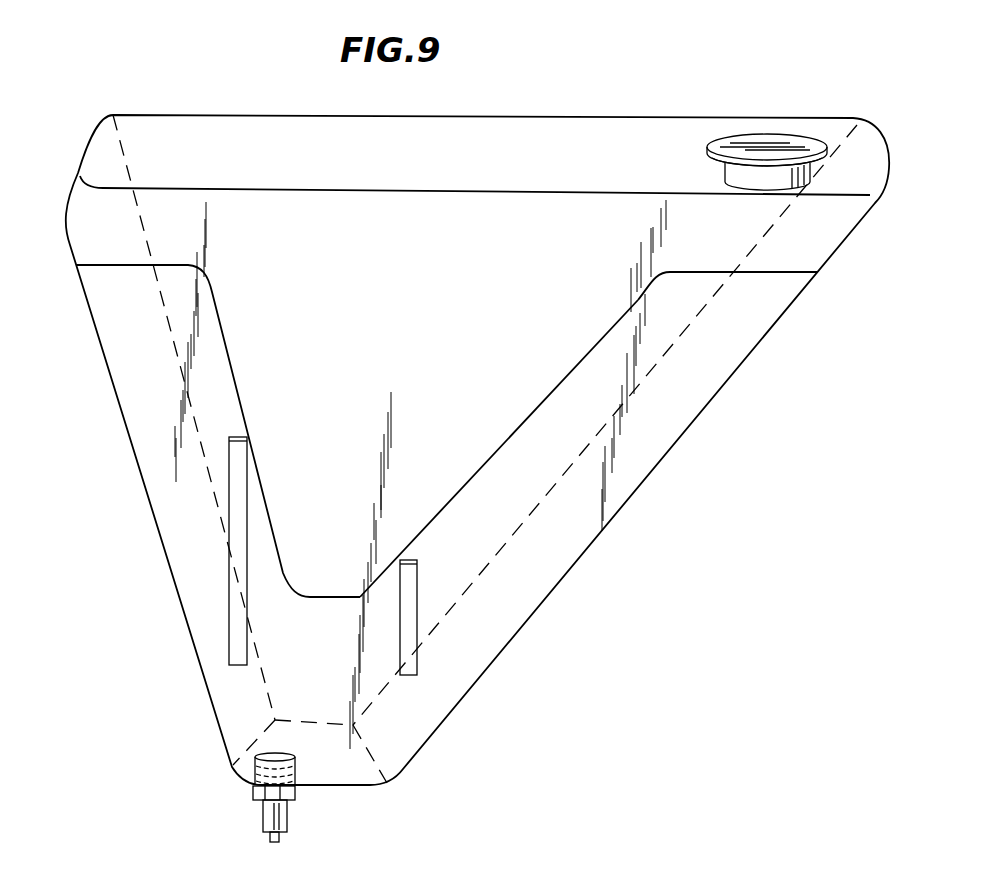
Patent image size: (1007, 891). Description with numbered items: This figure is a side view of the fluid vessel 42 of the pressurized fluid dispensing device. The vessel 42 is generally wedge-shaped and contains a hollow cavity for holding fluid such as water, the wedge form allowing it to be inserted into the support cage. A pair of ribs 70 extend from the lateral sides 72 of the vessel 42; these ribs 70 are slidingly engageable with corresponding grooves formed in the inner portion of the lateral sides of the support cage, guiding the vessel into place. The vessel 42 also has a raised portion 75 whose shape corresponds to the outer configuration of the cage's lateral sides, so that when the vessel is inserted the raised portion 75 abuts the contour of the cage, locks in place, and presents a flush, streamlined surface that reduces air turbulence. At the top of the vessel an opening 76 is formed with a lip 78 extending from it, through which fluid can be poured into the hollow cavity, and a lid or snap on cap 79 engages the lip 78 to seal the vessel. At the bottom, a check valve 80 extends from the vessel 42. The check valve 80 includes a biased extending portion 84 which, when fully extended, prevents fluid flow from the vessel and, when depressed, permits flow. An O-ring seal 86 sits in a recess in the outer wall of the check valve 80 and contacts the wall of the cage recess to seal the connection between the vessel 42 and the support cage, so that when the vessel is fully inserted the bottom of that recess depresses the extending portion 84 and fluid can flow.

The fluid vessel 42 is at (563, 108).
The ribs 70 is at (238, 540).
The lateral sides 72 is at (400, 390).
The raised portion 75 is at (590, 352).
The opening 76 is at (839, 162).
The lip 78 is at (836, 157).
The snap on cap 79 is at (778, 140).
The check valve 80 is at (296, 794).
The extending portion 84 is at (282, 838).
The O-ring seal 86 is at (262, 820).